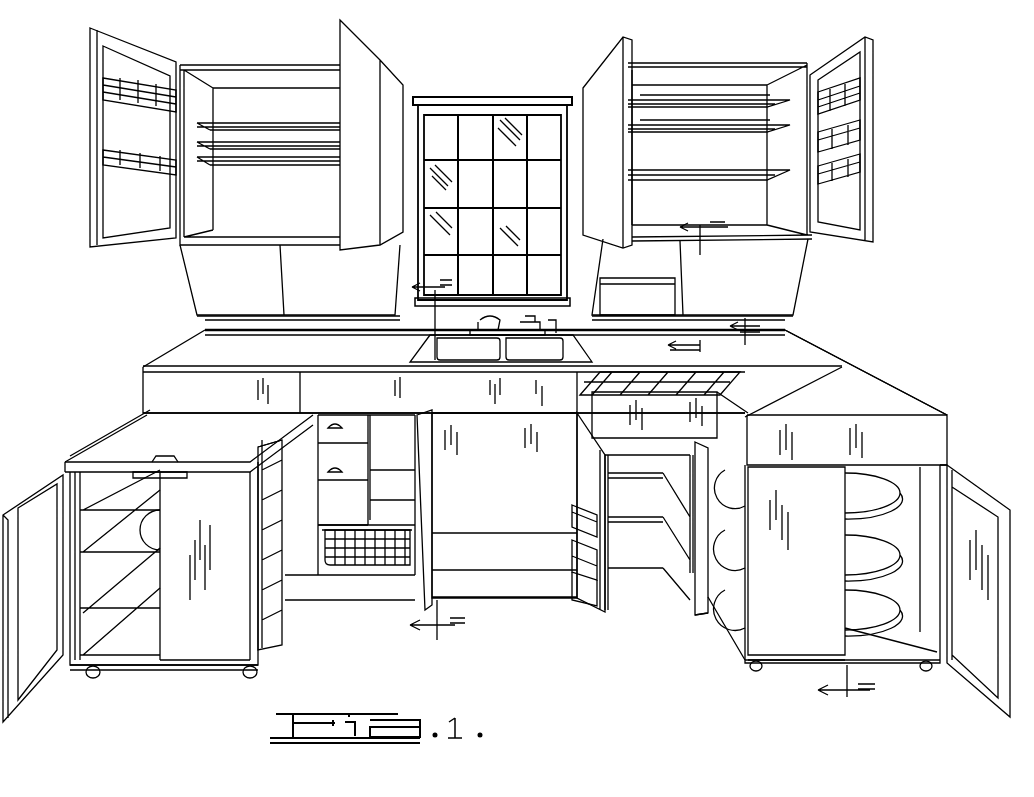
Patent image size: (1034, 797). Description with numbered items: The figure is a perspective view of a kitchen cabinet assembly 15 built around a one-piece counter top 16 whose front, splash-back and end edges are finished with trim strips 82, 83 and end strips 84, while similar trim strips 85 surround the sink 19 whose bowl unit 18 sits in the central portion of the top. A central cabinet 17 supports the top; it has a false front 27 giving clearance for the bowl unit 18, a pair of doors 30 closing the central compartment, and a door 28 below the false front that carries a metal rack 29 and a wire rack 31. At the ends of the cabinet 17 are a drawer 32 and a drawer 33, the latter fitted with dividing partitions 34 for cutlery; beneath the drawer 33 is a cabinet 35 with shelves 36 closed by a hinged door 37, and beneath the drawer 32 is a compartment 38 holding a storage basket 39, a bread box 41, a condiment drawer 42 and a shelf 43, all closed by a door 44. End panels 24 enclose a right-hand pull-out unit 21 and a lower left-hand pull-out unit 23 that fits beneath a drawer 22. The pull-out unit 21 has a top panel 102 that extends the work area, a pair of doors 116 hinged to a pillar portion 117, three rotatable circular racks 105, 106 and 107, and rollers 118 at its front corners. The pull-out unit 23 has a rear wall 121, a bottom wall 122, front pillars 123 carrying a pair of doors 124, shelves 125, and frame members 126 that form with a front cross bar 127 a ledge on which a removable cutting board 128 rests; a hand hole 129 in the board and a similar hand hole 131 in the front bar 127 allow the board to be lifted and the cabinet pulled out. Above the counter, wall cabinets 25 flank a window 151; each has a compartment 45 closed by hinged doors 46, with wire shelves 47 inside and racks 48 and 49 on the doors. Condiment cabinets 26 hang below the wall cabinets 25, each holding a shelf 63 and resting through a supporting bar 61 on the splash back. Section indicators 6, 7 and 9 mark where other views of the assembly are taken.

The section line 6- 6 is at (437, 460).
The section line 7- 7 is at (802, 508).
The section line 9- 9 is at (698, 283).
The cabinet assembly 15 is at (830, 350).
The counter top 16 is at (800, 340).
The central cabinet 17 is at (504, 505).
The bowl unit 18 is at (545, 350).
The sink 19 is at (595, 360).
The pull-out unit 21 is at (887, 397).
The drawer 22 is at (143, 388).
The pull-out unit 23 is at (86, 454).
The end panels 24 is at (143, 414).
The wall cabinets 25 is at (252, 66).
The condiment cabinets 26 is at (182, 266).
The false front 27 is at (492, 415).
The door 28 is at (571, 556).
The metal rack 29 is at (571, 514).
The pair of doors 30 is at (430, 508).
The wire rack 31 is at (571, 586).
The drawer 32 is at (372, 432).
The drawer 33 is at (722, 410).
The dividing partitions 34 is at (682, 388).
The cabinet 35 is at (695, 560).
The shelves 36 is at (647, 522).
The door 37 is at (700, 604).
The compartment 38 is at (414, 518).
The storage basket 39 is at (400, 552).
The bread box 41 is at (355, 482).
The drawer 42 is at (358, 422).
The shelf 43 is at (398, 508).
The door 44 is at (304, 580).
The compartment 45 is at (700, 94).
The hinged doors 46 is at (622, 45).
The wire shelves 47 is at (745, 103).
The racks 48 is at (850, 82).
The racks 49 is at (140, 88).
The supporting bar 61 is at (268, 320).
The shelf 63 is at (636, 290).
The trim strip 82 is at (143, 367).
The trim strip 83 is at (205, 330).
The end strips 84 is at (192, 338).
The trim strips 85 is at (412, 354).
The top panel 102 is at (905, 410).
The circular rack 105 is at (808, 613).
The circular rack 106 is at (808, 555).
The circular rack 107 is at (808, 494).
The pair of doors 116 is at (812, 620).
The pillar portion 117 is at (740, 627).
The rollers 118 is at (245, 675).
The rear wall 121 is at (276, 522).
The bottom wall 122 is at (275, 638).
The front pillars 123 is at (75, 582).
The pair of doors 124 is at (35, 690).
The shelves 125 is at (168, 532).
The frame members 126 is at (112, 436).
The front cross bar 127 is at (192, 478).
The cutting board 128 is at (175, 432).
The hand hole 129 is at (182, 458).
The hand hole 131 is at (192, 470).
The window 151 is at (496, 98).